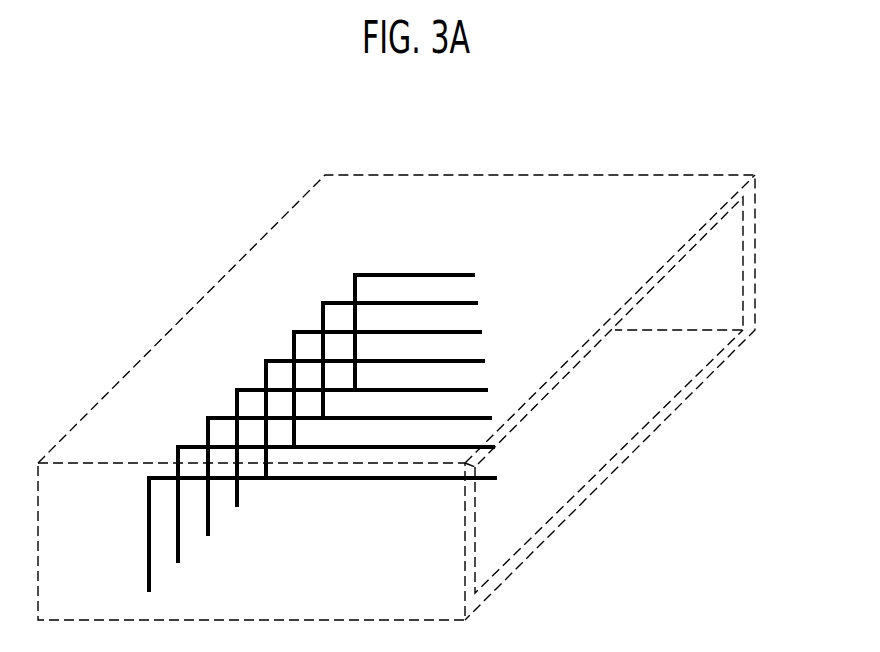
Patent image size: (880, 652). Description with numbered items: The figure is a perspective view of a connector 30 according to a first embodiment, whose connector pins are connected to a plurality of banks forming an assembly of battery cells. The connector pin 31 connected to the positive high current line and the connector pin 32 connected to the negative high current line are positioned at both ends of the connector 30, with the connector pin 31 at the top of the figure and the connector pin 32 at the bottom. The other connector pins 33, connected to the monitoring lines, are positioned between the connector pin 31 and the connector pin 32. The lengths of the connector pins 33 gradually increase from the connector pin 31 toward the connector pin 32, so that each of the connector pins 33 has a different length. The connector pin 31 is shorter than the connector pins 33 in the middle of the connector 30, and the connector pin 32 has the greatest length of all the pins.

The connector 30 is at (757, 222).
The connector pin 31 is at (448, 273).
The connector pin 32 is at (148, 532).
The monitoring connector pin 33 is at (318, 300).